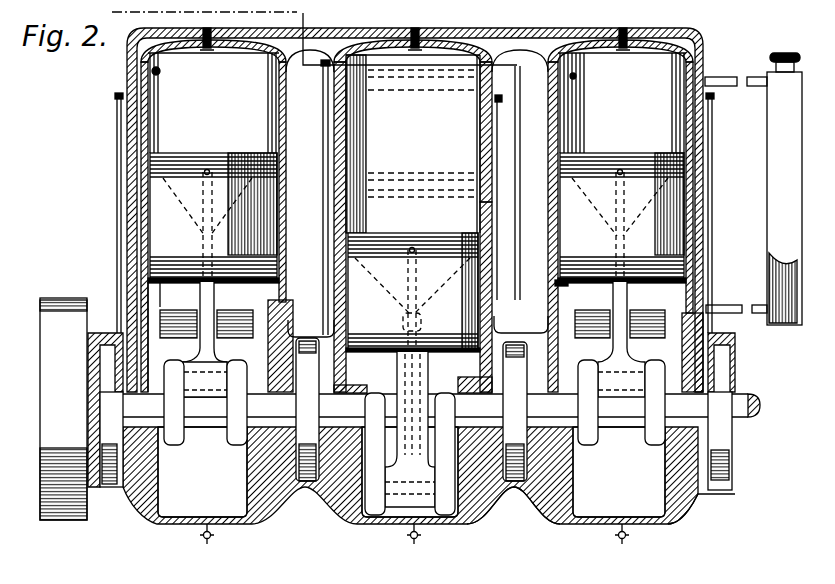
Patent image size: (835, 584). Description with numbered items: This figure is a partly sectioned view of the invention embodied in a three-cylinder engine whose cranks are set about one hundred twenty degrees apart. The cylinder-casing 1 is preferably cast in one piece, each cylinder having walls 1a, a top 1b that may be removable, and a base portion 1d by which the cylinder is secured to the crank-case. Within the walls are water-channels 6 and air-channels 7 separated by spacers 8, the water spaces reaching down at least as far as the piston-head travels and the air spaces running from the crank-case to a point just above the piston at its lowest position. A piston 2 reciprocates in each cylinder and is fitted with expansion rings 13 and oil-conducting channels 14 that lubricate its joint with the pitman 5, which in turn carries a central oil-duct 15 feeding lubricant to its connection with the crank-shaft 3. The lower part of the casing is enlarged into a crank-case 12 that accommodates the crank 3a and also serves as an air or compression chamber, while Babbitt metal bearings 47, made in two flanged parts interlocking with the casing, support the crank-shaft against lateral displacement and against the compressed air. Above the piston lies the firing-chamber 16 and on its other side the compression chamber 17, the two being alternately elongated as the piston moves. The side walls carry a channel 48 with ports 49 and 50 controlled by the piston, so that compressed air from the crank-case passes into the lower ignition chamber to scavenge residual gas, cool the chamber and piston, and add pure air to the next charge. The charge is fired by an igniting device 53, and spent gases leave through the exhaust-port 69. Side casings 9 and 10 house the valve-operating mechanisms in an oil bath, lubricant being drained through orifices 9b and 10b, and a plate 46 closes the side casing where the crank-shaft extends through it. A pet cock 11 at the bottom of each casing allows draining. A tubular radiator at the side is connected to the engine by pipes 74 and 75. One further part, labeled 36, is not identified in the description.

The cylinder-casing 1 is at (705, 63).
The cylinder walls 1a is at (703, 188).
The top of the cylinder 1b is at (410, 33).
The base portion of the cylinder 1d is at (690, 506).
The piston 2 is at (150, 214).
The crank-shaft 3 is at (441, 403).
The crank 3a is at (626, 412).
The pitman 5 is at (214, 303).
The water-channel 6 is at (480, 117).
The air-channel 7 is at (346, 137).
The spacer 8 is at (480, 218).
The side casing 9 is at (117, 477).
The orifice 9b is at (100, 492).
The side casing 10 is at (322, 494).
The orifice 10b is at (497, 494).
The pet cock 11 is at (208, 542).
The crank-case 12 is at (167, 508).
The expansion rings 13 is at (143, 165).
The oil-conducting channels 14 is at (398, 211).
The central oil-duct 15 is at (210, 360).
The firing-chamber 16 is at (417, 62).
The compression chamber 17 is at (247, 472).
The tie rod 36 is at (117, 140).
The plate 46 is at (735, 477).
The Babbitt metal bearings 47 is at (162, 425).
The channel 48 is at (533, 282).
The port 49 is at (570, 366).
The port 50 is at (558, 236).
The igniting device 53 is at (628, 30).
The exhaust-port 69 is at (127, 70).
The pipe 74 is at (752, 86).
The pipe 75 is at (730, 305).